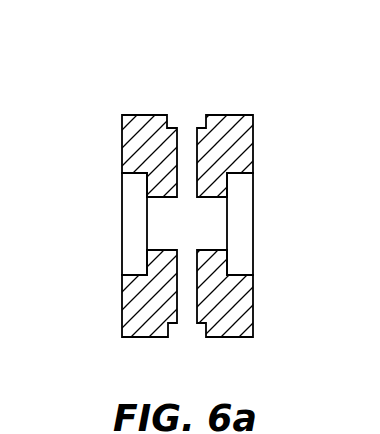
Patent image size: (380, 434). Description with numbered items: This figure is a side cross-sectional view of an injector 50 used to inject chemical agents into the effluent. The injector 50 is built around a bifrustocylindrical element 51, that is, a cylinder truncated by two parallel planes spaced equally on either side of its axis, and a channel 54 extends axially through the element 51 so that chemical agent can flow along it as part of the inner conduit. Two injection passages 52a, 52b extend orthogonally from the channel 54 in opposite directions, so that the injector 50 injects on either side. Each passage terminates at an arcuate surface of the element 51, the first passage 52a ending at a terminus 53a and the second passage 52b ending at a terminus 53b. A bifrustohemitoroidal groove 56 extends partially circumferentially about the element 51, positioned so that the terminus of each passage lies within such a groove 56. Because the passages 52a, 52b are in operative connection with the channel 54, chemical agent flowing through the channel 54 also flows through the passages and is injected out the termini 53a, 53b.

The injector 50 is at (219, 218).
The bifrustocylindrical element 51 is at (253, 135).
The injection passage 52a is at (188, 180).
The injection passage 52b is at (185, 263).
The terminus 53a is at (175, 123).
The terminus 53b is at (188, 338).
The channel 54 is at (158, 228).
The groove 56 is at (203, 120).